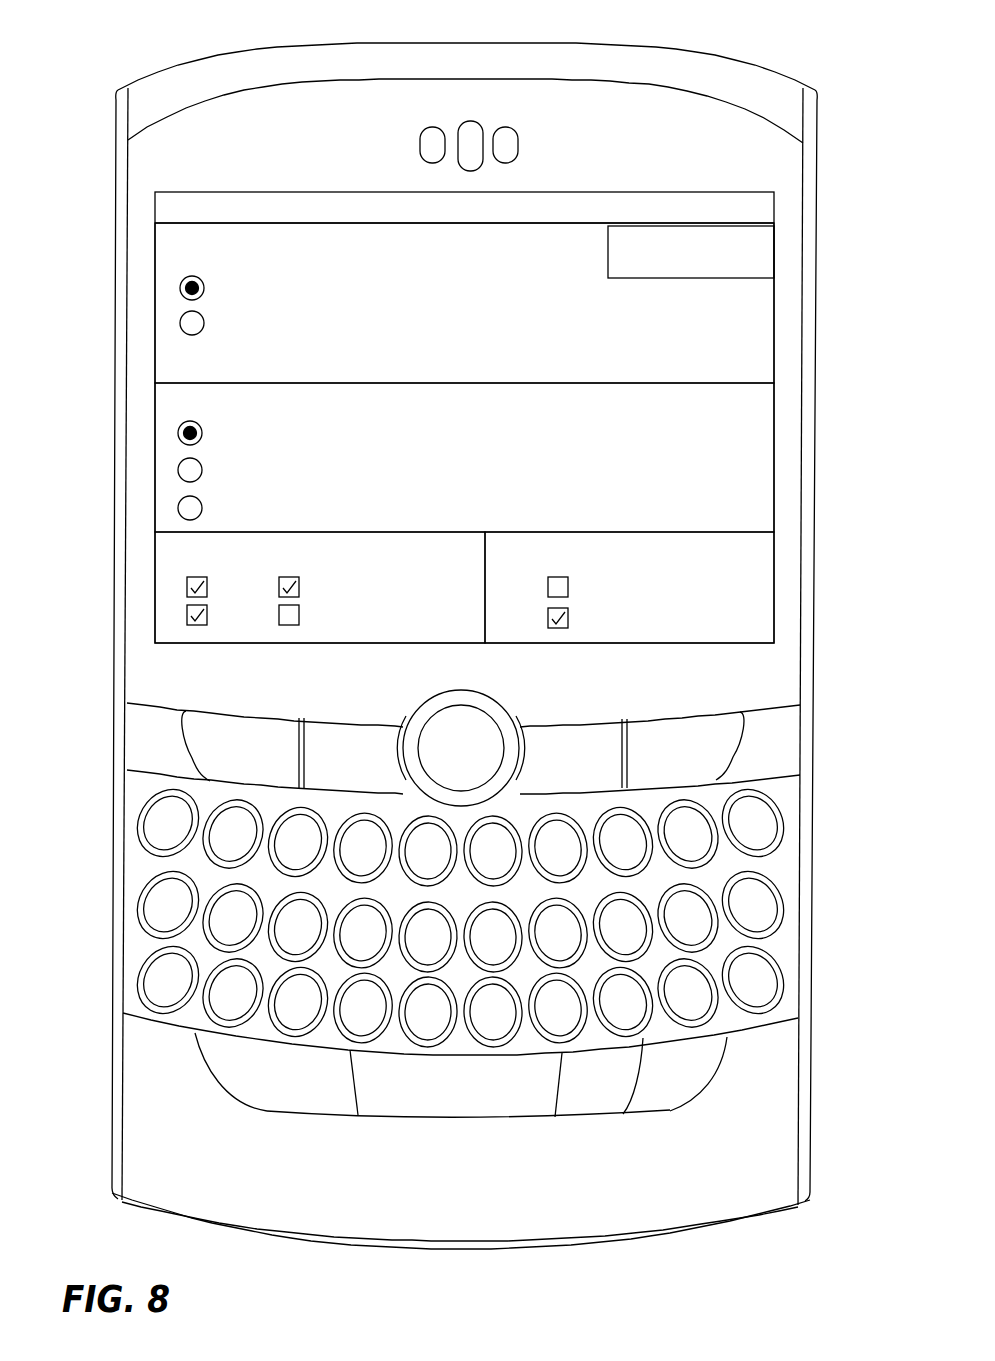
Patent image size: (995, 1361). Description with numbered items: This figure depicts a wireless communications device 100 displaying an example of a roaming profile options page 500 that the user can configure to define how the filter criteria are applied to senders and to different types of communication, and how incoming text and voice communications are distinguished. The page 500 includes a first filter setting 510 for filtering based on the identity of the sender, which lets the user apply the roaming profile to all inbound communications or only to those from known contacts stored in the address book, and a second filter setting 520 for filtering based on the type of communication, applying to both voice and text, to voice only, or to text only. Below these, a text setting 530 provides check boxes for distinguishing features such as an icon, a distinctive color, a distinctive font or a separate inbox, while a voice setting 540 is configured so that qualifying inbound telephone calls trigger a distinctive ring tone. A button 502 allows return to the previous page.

The mobile communication device 100 is at (138, 78).
The roaming profile options page 500 is at (148, 197).
The return to previous page button 502 is at (675, 278).
The first filter setting 510 is at (148, 234).
The second filter setting 520 is at (148, 386).
The text setting 530 is at (148, 537).
The voice setting 540 is at (755, 547).